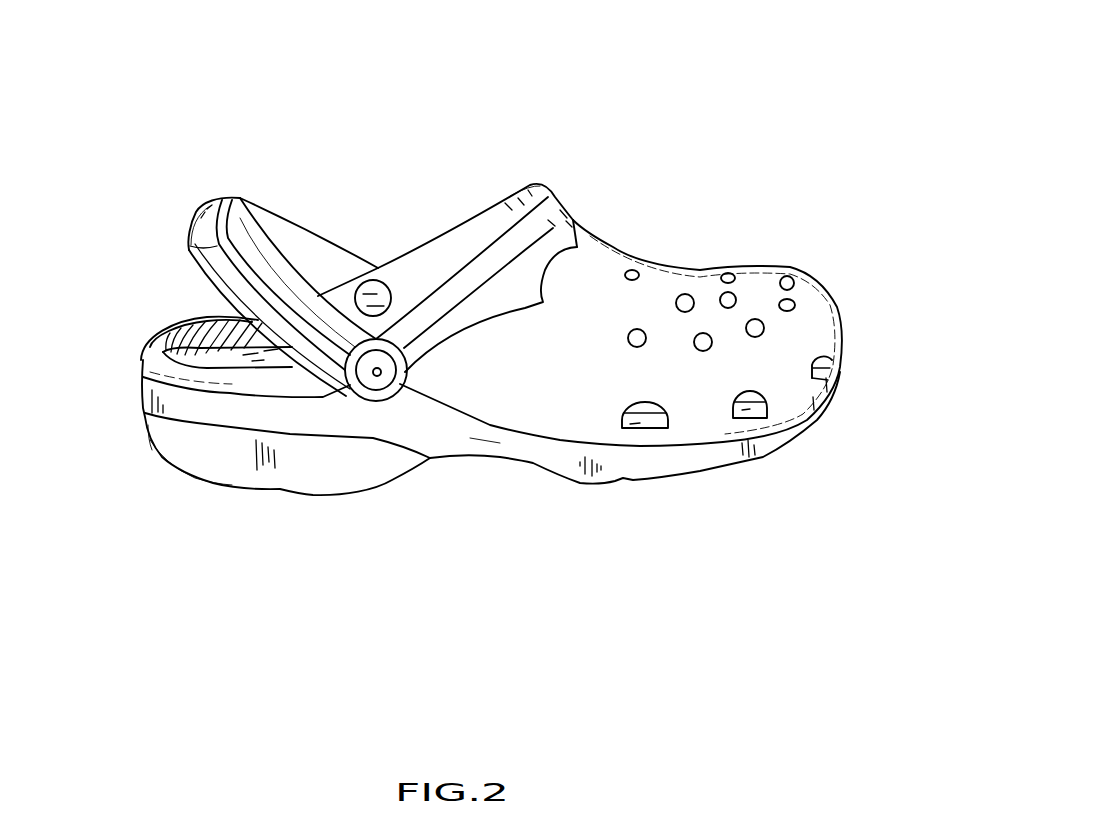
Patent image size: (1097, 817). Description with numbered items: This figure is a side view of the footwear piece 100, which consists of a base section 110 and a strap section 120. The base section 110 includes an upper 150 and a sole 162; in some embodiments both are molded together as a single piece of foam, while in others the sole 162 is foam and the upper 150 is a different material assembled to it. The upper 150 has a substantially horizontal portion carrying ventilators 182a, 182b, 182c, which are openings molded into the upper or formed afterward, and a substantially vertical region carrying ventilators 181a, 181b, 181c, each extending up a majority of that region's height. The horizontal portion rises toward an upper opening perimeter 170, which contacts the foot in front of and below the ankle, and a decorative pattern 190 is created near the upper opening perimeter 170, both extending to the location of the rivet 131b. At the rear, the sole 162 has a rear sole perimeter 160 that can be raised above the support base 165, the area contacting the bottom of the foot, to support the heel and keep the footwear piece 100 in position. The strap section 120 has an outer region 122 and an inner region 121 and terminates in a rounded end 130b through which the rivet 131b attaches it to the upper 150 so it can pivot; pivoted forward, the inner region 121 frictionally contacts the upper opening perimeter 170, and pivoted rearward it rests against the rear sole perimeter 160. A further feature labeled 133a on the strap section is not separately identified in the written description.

The footwear piece 100 is at (790, 92).
The base section 110 is at (800, 226).
The strap section 120 is at (285, 208).
The inner region 121 is at (317, 338).
The outer region 122 is at (316, 265).
The rounded end 130b is at (371, 401).
The rivet 131b is at (382, 378).
The connector fastener 133a is at (375, 280).
The upper 150 is at (519, 392).
The rear sole perimeter 160 is at (147, 358).
The sole 162 is at (212, 458).
The support base 165 is at (227, 362).
The upper opening perimeter 170 is at (542, 197).
The ventilator 181a is at (653, 423).
The ventilator 181b is at (757, 408).
The ventilator 181c is at (832, 362).
The ventilator 182a is at (632, 342).
The ventilator 182b is at (626, 276).
The ventilator 182c is at (686, 296).
The decorative pattern 190 is at (541, 303).